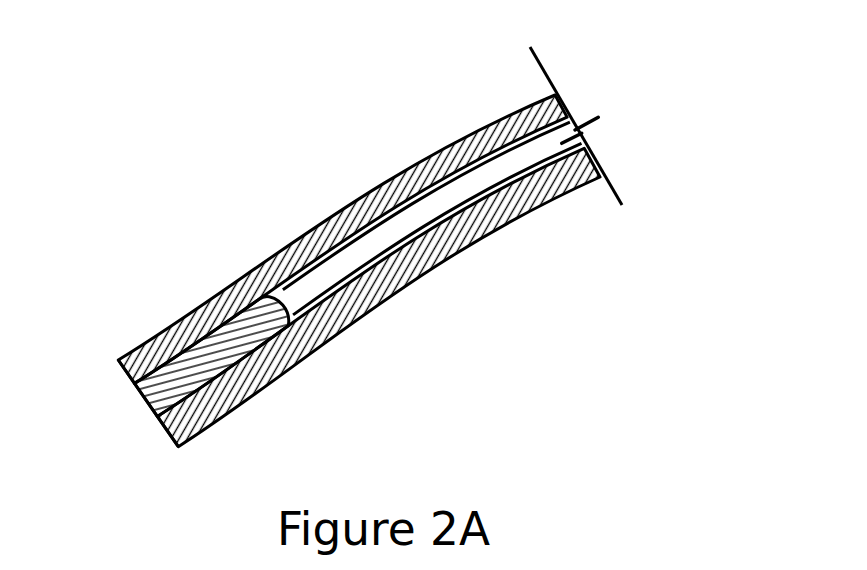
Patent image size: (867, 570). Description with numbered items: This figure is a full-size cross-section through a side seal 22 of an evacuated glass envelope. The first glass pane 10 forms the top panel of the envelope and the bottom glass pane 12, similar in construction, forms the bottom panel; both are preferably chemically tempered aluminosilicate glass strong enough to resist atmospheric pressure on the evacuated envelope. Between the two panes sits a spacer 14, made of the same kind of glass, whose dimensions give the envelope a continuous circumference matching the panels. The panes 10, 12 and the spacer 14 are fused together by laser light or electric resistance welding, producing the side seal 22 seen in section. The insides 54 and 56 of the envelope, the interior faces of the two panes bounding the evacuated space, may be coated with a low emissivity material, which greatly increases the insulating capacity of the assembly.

The first glass pane 10 is at (360, 198).
The bottom glass pane 12 is at (418, 278).
The spacer 14 is at (150, 403).
The side seal 22 is at (137, 385).
The inside surface of glass envelope 54 is at (572, 118).
The inside surface of glass envelope 56 is at (583, 140).